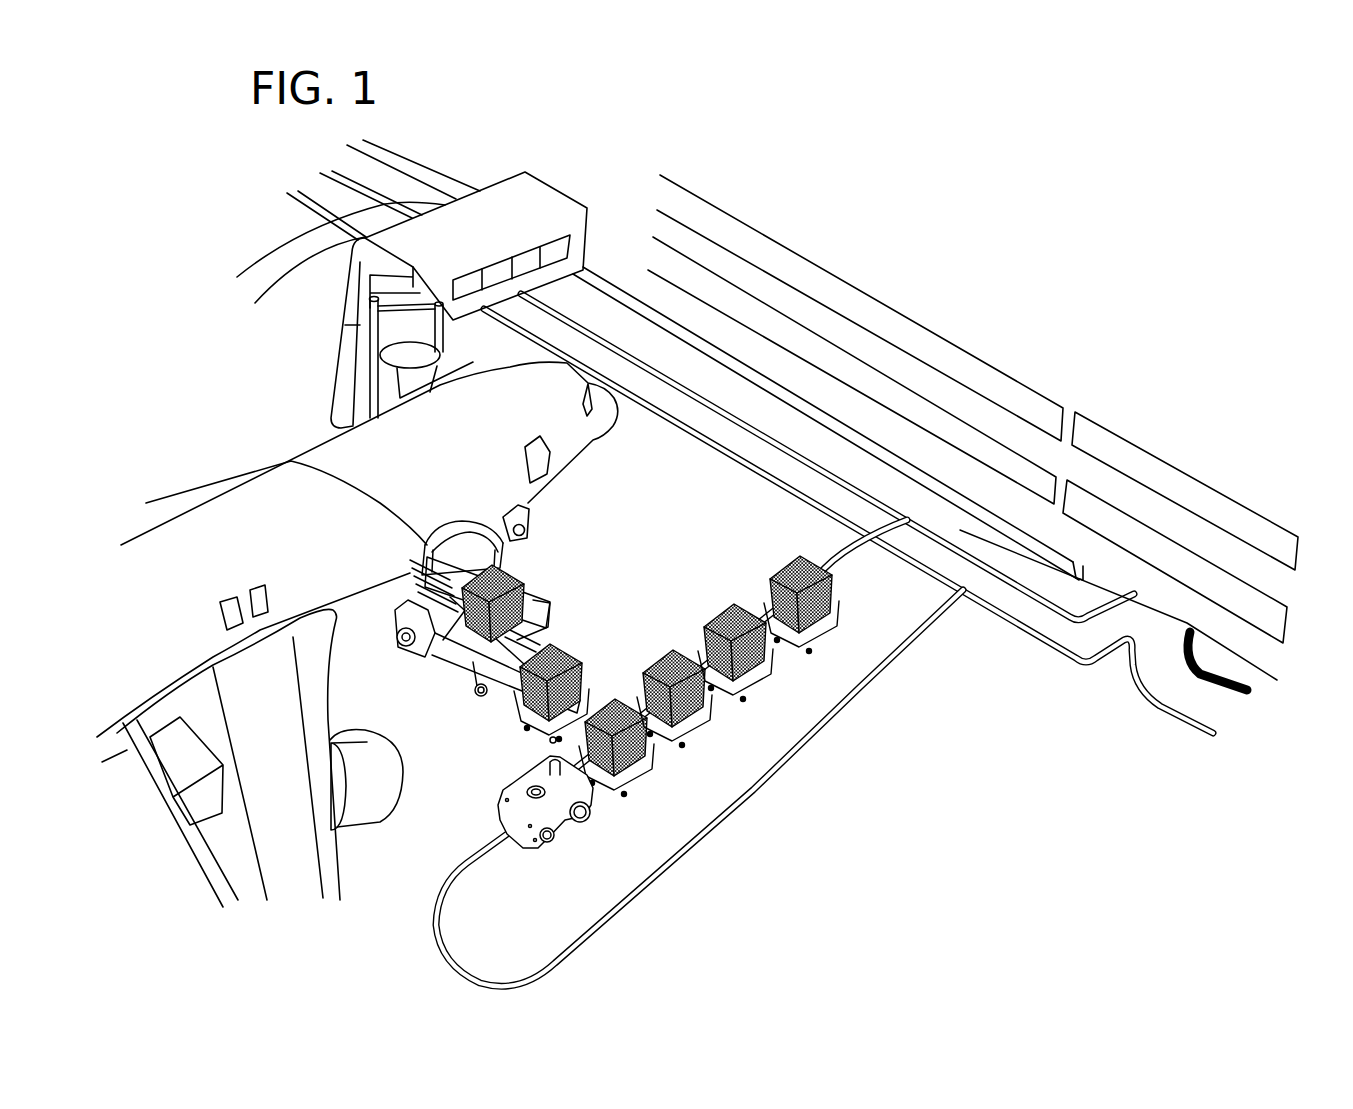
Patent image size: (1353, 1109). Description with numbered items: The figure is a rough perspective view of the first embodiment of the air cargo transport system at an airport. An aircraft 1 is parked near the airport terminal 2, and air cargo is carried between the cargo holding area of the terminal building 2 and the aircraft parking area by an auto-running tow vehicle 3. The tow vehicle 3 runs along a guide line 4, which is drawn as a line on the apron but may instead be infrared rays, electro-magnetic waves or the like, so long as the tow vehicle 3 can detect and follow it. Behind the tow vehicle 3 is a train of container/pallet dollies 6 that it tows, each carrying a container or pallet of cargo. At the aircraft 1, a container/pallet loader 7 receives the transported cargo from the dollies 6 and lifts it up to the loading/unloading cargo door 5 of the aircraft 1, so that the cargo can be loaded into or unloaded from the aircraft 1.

The aircraft 1 is at (592, 422).
The airport terminal 2 is at (852, 332).
The auto-running tow vehicle 3 is at (517, 797).
The guide line 4 is at (1010, 632).
The loading/unloading cargo door 5 is at (294, 462).
The container/pallet dollies 6 is at (807, 636).
The container/pallet loader 7 is at (537, 585).